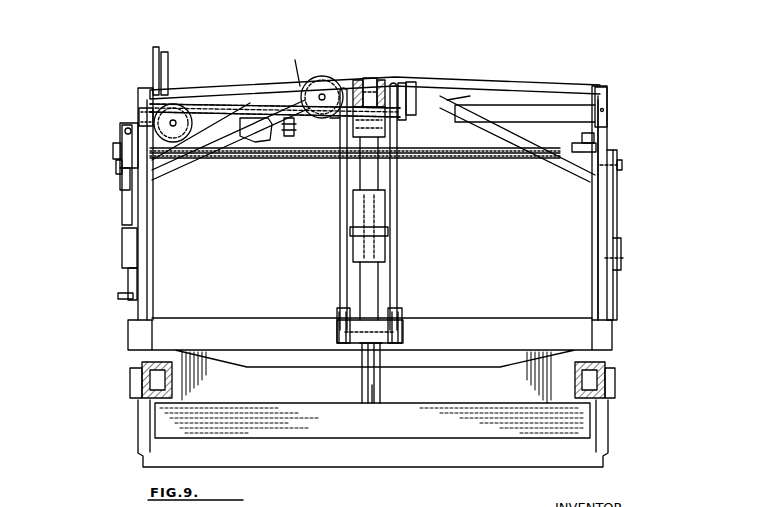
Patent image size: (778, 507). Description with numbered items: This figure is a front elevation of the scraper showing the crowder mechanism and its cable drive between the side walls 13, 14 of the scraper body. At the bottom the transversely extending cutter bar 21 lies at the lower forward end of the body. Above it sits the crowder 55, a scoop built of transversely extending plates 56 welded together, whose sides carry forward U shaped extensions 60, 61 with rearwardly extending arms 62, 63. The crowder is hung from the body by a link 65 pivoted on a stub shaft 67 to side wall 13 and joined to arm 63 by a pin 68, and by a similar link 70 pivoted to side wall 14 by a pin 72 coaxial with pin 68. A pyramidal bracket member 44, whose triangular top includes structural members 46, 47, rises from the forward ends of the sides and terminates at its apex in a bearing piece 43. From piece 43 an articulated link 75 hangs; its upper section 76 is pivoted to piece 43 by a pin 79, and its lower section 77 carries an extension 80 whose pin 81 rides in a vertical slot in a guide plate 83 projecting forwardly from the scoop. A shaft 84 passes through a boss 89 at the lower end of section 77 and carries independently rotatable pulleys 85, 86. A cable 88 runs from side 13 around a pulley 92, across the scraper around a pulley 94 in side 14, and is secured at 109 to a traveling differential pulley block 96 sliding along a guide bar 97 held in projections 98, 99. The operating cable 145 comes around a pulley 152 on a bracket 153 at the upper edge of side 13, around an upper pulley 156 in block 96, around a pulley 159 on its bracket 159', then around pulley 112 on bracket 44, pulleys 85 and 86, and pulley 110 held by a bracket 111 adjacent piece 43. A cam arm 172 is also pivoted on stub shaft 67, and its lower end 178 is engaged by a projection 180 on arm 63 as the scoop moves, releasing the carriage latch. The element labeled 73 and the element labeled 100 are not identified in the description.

The side wall 13 is at (150, 272).
The side wall 14 is at (592, 258).
The cutter bar 21 is at (352, 445).
The bearing piece 43 is at (370, 78).
The pyramidal bracket member 44 is at (444, 76).
The structural member 46 is at (560, 76).
The structural member 47 is at (226, 88).
The crowder 55 is at (269, 319).
The plates 56 is at (312, 400).
The U shaped extension 60 is at (612, 332).
The U shaped extension 61 is at (130, 338).
The rearwardly extending arm 62 is at (617, 292).
The rearwardly extending arm 63 is at (128, 278).
The link 65 is at (128, 210).
The stub shaft 67 is at (118, 162).
The pin 68 is at (122, 258).
The link 70 is at (616, 205).
The pin 72 is at (622, 165).
The right lower block 73 is at (622, 259).
The articulated link 75 is at (386, 213).
The link section 76 is at (372, 182).
The link section 77 is at (378, 279).
The pin 79 is at (330, 130).
The extension 80 is at (380, 350).
The pin 81 is at (362, 350).
The guide plate 83 is at (374, 388).
The shaft 84 is at (337, 310).
The pulley 85 is at (338, 332).
The pulley 86 is at (404, 334).
The cable 88 is at (248, 148).
The boss 89 is at (392, 318).
The pulley 92 is at (118, 145).
The pulley 94 is at (597, 146).
The traveling differential pulley block 96 is at (260, 102).
The guide bar 97 is at (500, 106).
The projection 98 is at (140, 116).
The projection 99 is at (607, 111).
The middle rail 100 is at (512, 160).
The cable securing point 109 is at (294, 134).
The pulley 110 is at (406, 115).
The bracket 111 is at (424, 82).
The pulley 112 is at (330, 80).
The cable 145 is at (335, 182).
The pulley 152 is at (168, 50).
The bracket 153 is at (172, 62).
The upper pulley 156 is at (292, 100).
The pulley 159 is at (184, 103).
The bracket 159' is at (118, 87).
The cam arm 172 is at (122, 133).
The lower end of cam arm 178 is at (122, 186).
The projection 180 is at (122, 297).